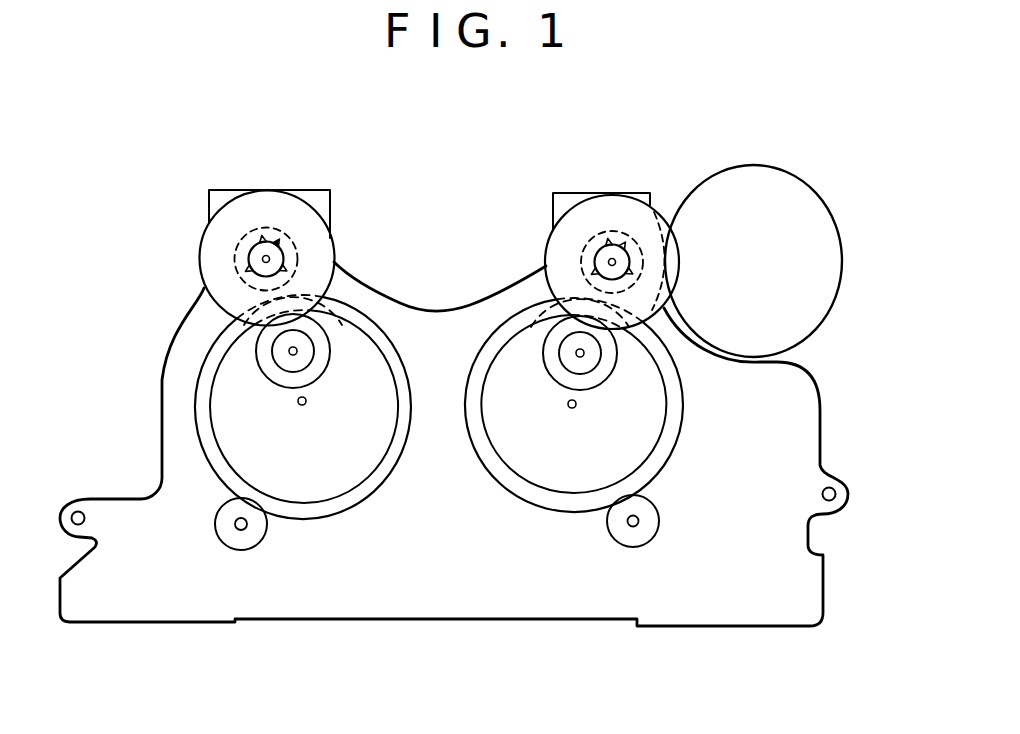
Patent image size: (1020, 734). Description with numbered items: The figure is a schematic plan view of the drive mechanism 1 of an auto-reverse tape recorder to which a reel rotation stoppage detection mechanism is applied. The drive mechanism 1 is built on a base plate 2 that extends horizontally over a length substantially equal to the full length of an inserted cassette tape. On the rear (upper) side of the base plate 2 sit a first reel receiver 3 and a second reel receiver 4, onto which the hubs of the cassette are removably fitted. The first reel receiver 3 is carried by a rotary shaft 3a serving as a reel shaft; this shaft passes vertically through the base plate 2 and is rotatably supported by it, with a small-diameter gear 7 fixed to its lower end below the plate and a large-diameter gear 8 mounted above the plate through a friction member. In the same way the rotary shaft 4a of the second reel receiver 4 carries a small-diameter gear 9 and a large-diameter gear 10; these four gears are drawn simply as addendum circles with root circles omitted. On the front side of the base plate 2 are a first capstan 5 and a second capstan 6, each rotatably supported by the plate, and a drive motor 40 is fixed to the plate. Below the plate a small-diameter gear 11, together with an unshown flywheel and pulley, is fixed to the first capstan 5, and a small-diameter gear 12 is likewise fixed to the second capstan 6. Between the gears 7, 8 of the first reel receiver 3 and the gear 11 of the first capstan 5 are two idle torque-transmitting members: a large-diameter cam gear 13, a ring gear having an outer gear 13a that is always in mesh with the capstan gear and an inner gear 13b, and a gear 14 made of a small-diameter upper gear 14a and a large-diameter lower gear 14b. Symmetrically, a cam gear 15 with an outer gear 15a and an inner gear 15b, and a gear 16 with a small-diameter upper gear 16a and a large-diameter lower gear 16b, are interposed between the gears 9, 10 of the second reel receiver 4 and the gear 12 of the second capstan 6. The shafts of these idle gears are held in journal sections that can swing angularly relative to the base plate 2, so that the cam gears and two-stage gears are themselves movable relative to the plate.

The drive mechanism 1 is at (461, 187).
The base plate 2 is at (381, 600).
The first reel receiver 3 is at (280, 238).
The rotary shaft 3a is at (262, 237).
The second reel receiver 4 is at (607, 240).
The rotary shaft 4a is at (626, 243).
The first capstan 5 is at (241, 528).
The second capstan 6 is at (635, 527).
The small-diameter gear 7 is at (242, 248).
The large-diameter gear 8 is at (200, 258).
The small-diameter gear 9 is at (587, 242).
The large-diameter gear 10 is at (547, 244).
The small-diameter gear 11 is at (255, 550).
The small-diameter gear 12 is at (618, 546).
The cam gear 13 is at (197, 378).
The outer gear 13a is at (193, 413).
The inner gear 13b is at (213, 443).
The gear 14 is at (256, 354).
The small-diameter upper gear 14a is at (378, 312).
The large-diameter lower gear 14b is at (345, 302).
The cam gear 15 is at (667, 463).
The outer gear 15a is at (563, 512).
The inner gear 15b is at (540, 493).
The gear 16 is at (545, 380).
The small-diameter upper gear 16a is at (550, 348).
The large-diameter lower gear 16b is at (550, 327).
The drive motor 40 is at (818, 193).